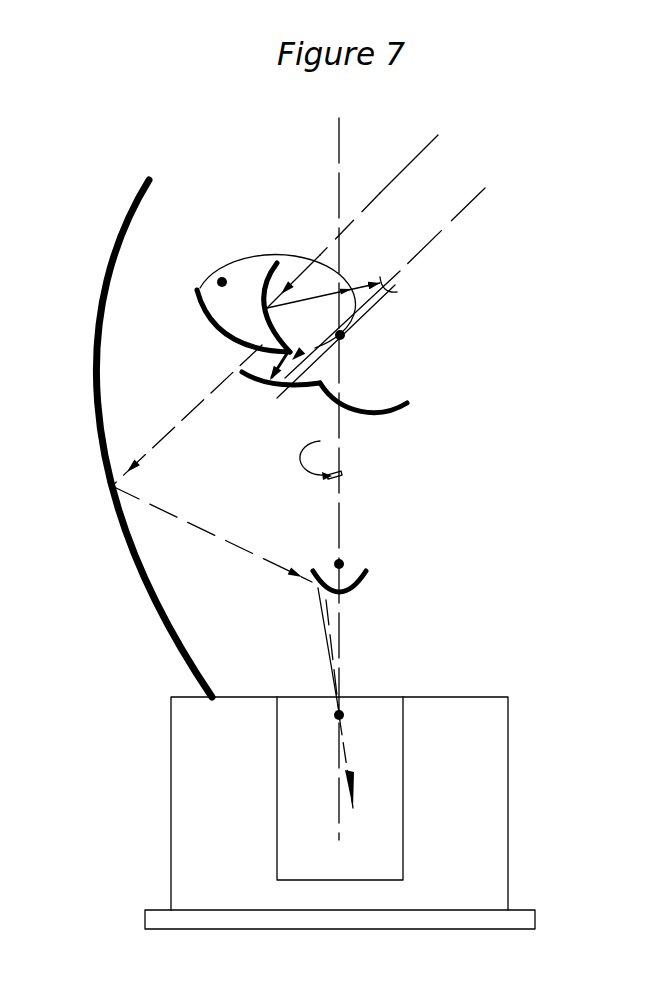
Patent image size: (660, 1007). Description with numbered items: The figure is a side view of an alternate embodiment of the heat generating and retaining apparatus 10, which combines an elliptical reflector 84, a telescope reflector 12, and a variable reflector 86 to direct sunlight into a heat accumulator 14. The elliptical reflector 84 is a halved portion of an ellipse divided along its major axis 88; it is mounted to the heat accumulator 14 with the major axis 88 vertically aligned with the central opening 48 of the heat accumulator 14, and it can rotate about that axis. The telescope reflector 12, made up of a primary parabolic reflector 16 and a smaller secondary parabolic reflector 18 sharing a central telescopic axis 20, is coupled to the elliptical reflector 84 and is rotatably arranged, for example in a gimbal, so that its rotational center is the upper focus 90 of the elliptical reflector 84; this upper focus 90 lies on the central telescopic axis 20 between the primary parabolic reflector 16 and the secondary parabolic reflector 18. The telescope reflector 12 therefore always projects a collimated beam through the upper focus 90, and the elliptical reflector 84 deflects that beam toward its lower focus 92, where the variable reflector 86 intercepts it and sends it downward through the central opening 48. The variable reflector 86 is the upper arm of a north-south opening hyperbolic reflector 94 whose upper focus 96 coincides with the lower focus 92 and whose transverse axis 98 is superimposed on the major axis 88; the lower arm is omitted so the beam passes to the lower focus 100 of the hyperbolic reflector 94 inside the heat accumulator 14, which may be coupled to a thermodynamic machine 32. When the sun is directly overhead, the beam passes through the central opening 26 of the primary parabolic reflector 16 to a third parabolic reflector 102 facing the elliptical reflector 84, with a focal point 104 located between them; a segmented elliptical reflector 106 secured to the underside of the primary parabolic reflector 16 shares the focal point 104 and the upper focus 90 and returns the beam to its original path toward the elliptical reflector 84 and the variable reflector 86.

The apparatus for harnessing solar energy 10 is at (526, 230).
The telescope reflector 12 is at (266, 259).
The heat accumulator 14 is at (474, 783).
The primary parabolic reflector 16 is at (411, 405).
The secondary parabolic reflector 18 is at (396, 296).
The central telescopic axis 20 is at (440, 244).
The central opening of the primary parabolic reflector 26 is at (318, 373).
The thermodynamic machine 32 is at (520, 918).
The central opening of the heat accumulator 48 is at (403, 697).
The elliptical reflector 84 is at (120, 215).
The variable reflector 86 is at (378, 568).
The major axis 88 is at (346, 473).
The upper focus of the elliptical reflector 90 is at (350, 337).
The lower focus of the elliptical reflector 92 is at (350, 557).
The hyperbolic reflector 94 is at (370, 585).
The upper focus of the hyperbolic reflector 96 is at (333, 553).
The transverse axis 98 is at (347, 478).
The lower focus of the hyperbolic reflector 100 is at (341, 711).
The third parabolic reflector 102 is at (268, 392).
The focal point of the third parabolic reflector 104 is at (218, 275).
The segmented elliptical reflector 106 is at (212, 328).